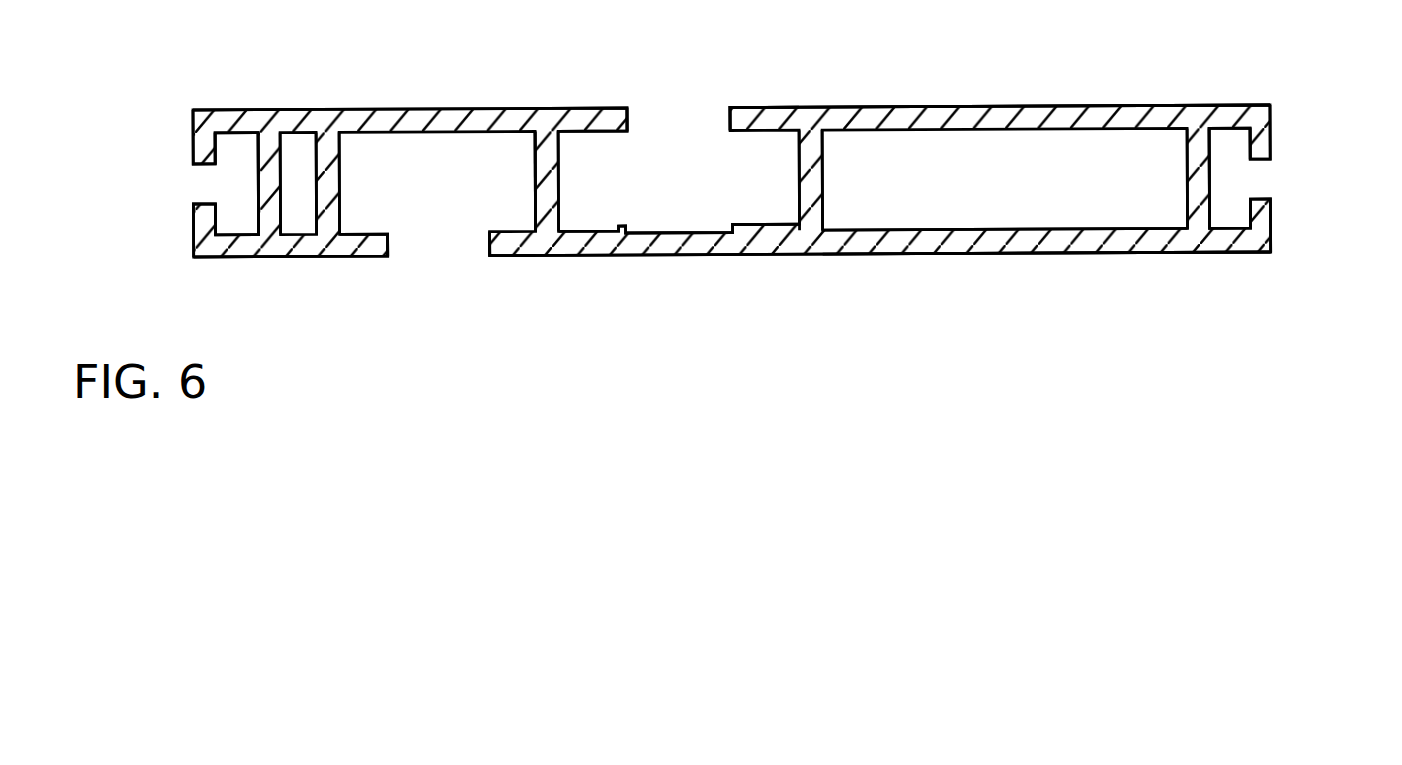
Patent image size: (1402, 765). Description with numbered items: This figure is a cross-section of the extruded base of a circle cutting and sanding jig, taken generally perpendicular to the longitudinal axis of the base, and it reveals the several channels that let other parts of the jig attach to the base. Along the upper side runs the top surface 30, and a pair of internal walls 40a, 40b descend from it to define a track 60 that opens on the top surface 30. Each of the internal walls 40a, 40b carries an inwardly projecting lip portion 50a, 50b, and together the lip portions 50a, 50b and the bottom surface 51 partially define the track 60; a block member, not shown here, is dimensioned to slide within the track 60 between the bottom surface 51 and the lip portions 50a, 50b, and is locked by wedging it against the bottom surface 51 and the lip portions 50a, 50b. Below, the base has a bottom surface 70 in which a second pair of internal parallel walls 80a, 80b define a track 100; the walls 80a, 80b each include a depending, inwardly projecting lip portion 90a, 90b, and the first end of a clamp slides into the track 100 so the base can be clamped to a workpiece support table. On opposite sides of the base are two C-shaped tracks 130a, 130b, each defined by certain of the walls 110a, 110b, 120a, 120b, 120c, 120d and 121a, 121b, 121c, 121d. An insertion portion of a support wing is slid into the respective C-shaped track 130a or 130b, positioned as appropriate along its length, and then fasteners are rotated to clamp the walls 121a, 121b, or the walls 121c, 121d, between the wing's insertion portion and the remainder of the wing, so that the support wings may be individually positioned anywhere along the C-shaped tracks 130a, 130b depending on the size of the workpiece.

The top surface 30 is at (995, 106).
The internal wall 40a is at (560, 188).
The internal wall 40b is at (797, 197).
The inwardly projecting lip portion 50a is at (617, 108).
The inwardly projecting lip portion 50b is at (752, 107).
The bottom surface 51 is at (757, 228).
The track 60 is at (648, 208).
The bottom surface 70 is at (1025, 257).
The internal parallel wall 80a is at (343, 172).
The internal parallel wall 80b is at (532, 210).
The depending, inwardly projecting lip portion 90a is at (357, 258).
The depending, inwardly projecting lip portion 90b is at (495, 257).
The track 100 is at (463, 220).
The wall 110a is at (287, 175).
The wall 110b is at (1185, 190).
The wall 120a is at (233, 108).
The wall 120b is at (222, 258).
The wall 120c is at (1241, 105).
The wall 120d is at (1231, 254).
The wall 121a is at (193, 145).
The wall 121b is at (193, 237).
The wall 121c is at (1270, 137).
The wall 121d is at (1270, 221).
The C-shaped track 130a is at (228, 187).
The C-shaped track 130b is at (1261, 180).